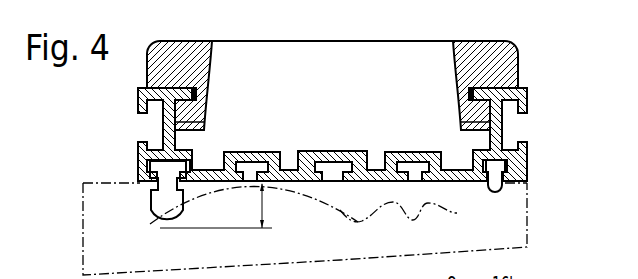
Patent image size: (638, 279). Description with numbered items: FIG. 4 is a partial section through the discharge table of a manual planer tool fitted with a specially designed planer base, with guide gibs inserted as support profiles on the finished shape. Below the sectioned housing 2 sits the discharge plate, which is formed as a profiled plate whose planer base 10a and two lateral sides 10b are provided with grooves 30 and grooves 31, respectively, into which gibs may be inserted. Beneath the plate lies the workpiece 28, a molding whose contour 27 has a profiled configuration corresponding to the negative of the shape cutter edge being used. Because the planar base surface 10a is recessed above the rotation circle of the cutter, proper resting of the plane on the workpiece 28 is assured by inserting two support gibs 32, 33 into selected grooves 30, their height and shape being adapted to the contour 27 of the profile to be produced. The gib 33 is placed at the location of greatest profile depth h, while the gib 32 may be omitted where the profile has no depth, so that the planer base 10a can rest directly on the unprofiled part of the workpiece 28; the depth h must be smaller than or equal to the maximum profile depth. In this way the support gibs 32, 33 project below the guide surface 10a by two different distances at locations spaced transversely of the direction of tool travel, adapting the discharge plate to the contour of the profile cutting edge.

The housing 2 is at (462, 50).
The planer base 10a is at (461, 184).
The lateral sides of the discharge plate 10b is at (130, 155).
The contour 27 is at (334, 220).
The workpiece 28 is at (100, 250).
The grooves 30 is at (398, 150).
The grooves 31 is at (160, 118).
The support gib 32 is at (502, 191).
The support gib 33 is at (150, 223).
The profile depth h is at (217, 205).